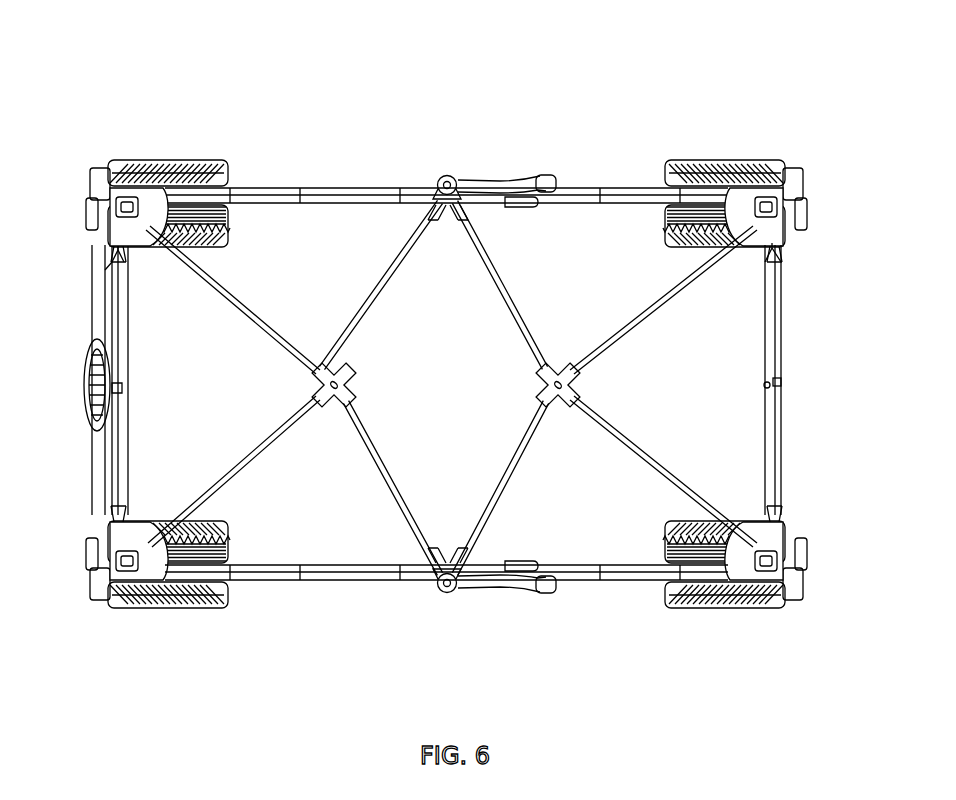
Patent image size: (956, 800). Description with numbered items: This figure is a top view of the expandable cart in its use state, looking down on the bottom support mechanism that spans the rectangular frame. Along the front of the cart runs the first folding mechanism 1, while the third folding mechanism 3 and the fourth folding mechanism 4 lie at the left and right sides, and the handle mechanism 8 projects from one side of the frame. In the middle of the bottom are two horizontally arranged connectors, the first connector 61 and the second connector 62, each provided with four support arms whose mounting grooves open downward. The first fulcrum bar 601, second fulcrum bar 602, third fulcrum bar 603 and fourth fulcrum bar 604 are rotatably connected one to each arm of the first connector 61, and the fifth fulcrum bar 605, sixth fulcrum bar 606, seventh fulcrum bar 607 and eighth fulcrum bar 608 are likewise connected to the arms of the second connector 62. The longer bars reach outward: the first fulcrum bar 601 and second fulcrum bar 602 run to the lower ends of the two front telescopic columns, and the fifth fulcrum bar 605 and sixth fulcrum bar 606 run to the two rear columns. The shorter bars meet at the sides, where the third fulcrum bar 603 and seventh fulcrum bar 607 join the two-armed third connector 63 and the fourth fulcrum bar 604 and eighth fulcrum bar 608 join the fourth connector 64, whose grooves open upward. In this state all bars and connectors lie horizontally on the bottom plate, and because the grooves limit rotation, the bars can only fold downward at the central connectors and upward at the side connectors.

The first folding mechanism 1 is at (118, 320).
The third folding mechanism 3 is at (237, 183).
The fourth folding mechanism 4 is at (773, 337).
The handle mechanism 8 is at (82, 372).
The first connector 61 is at (345, 370).
The second connector 62 is at (565, 365).
The third connector 63 is at (463, 175).
The fourth connector 64 is at (452, 598).
The first fulcrum bar 601 is at (275, 325).
The second fulcrum bar 602 is at (262, 450).
The third fulcrum bar 603 is at (388, 290).
The fourth fulcrum bar 604 is at (365, 450).
The fifth fulcrum bar 605 is at (645, 312).
The sixth fulcrum bar 606 is at (687, 488).
The seventh fulcrum bar 607 is at (513, 297).
The eighth fulcrum bar 608 is at (510, 500).